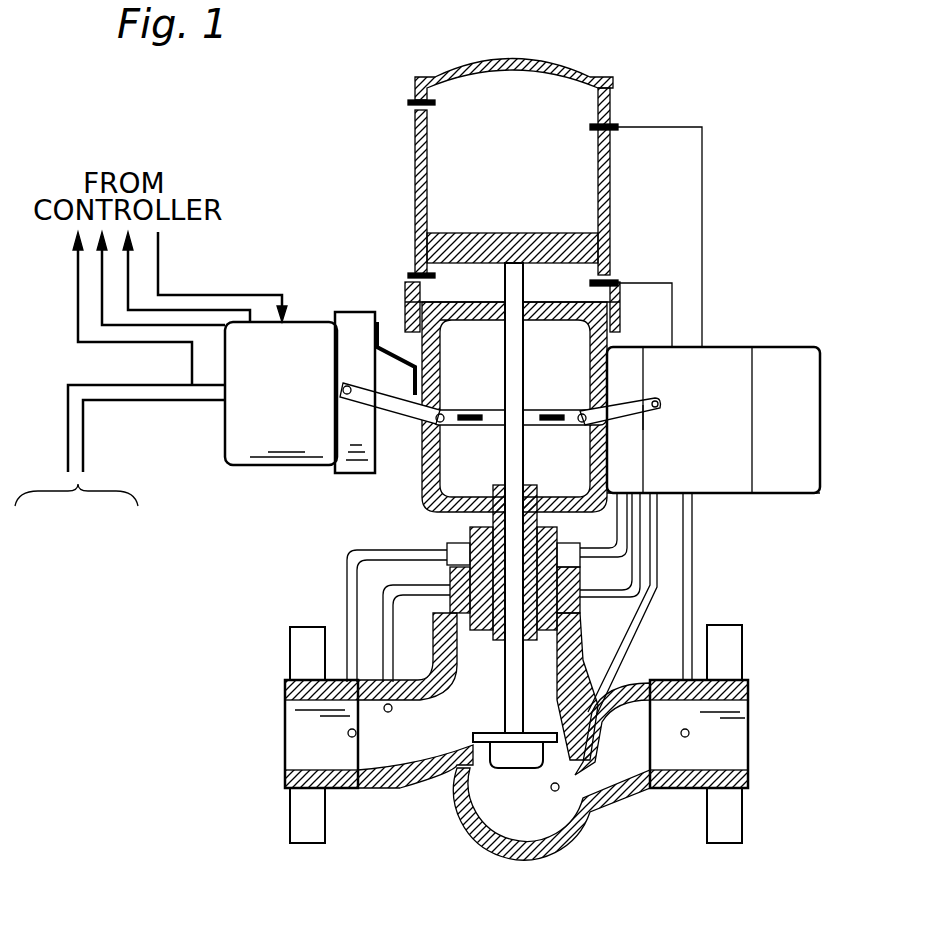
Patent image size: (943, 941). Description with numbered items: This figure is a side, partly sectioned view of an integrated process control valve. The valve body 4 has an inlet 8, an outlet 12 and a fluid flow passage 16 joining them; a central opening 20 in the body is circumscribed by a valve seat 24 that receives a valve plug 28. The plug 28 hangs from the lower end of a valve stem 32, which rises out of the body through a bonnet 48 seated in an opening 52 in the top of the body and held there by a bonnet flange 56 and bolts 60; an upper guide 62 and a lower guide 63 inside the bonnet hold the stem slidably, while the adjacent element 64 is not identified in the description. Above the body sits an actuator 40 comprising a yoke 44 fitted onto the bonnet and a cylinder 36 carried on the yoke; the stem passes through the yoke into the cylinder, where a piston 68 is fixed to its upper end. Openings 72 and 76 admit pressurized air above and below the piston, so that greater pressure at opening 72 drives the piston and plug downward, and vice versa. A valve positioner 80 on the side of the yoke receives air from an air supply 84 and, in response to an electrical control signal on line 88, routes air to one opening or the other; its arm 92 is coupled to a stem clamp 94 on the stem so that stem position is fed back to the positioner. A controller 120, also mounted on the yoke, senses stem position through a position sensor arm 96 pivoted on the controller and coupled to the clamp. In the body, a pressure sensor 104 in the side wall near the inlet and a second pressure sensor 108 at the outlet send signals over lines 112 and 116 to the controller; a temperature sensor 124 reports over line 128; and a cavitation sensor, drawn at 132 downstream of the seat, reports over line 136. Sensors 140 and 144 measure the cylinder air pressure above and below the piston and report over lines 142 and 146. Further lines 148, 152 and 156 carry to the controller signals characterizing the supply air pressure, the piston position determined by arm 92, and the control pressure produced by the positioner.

The valve body 4 is at (470, 836).
The inlet 8 is at (300, 771).
The outlet 12 is at (748, 716).
The fluid flow passage 16 is at (660, 788).
The central opening 20 is at (466, 800).
The valve seat 24 is at (558, 834).
The valve plug 28 is at (517, 768).
The valve stem 32 is at (422, 483).
The cylinder 36 is at (415, 183).
The actuator 40 is at (758, 236).
The yoke 44 is at (767, 493).
The bonnet 48 is at (383, 590).
The opening 52 is at (437, 780).
The bonnet flange 56 is at (362, 550).
The bolts 60 is at (447, 543).
The upper guide 62 is at (660, 527).
The lower guide 63 is at (640, 615).
The packing flange 64 is at (640, 596).
The piston 68 is at (562, 236).
The opening 72 is at (415, 102).
The opening 76 is at (415, 275).
The valve positioner 80 is at (250, 467).
The air supply 84 is at (120, 482).
The line 88 is at (212, 295).
The arm 92 is at (340, 473).
The stem clamp 94 is at (548, 411).
The position sensor arm 96 is at (643, 422).
The pressure sensor 104 is at (298, 750).
The second pressure sensor 108 is at (688, 735).
The line 112 is at (345, 613).
The line 116 is at (692, 666).
The controller 120 is at (806, 334).
The temperature sensor 124 is at (290, 712).
The line 128 is at (387, 650).
The drain port 132 is at (598, 812).
The line 136 is at (707, 641).
The sensor 140 is at (612, 127).
The line 142 is at (702, 158).
The sensor 144 is at (612, 283).
The signal line 146 is at (672, 298).
The line 148 is at (192, 364).
The line 152 is at (103, 338).
The line 156 is at (126, 298).